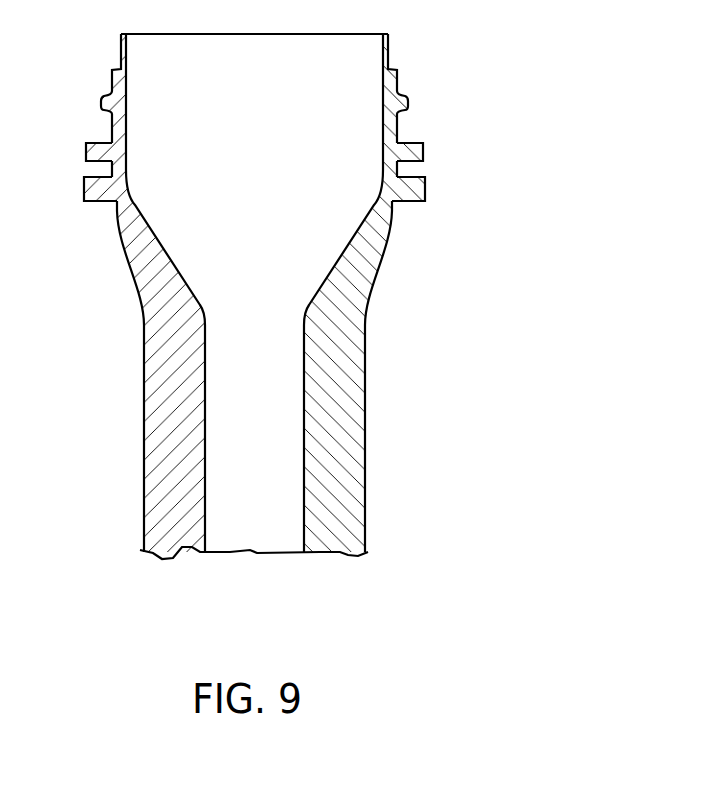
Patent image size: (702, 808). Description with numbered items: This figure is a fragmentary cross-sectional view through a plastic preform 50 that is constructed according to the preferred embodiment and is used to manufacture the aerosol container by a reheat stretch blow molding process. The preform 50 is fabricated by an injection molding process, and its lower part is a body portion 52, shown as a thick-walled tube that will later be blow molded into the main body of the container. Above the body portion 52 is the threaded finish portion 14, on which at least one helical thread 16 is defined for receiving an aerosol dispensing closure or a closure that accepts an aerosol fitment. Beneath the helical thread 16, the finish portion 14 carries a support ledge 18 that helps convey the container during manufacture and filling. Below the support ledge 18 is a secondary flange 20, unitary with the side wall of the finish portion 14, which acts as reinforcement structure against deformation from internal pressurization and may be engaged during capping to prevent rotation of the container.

The threaded finish portion 14 is at (440, 107).
The helical thread 16 is at (404, 91).
The support ledge 18 is at (425, 155).
The secondary flange 20 is at (425, 192).
The plastic preform 50 is at (445, 403).
The body portion 52 is at (358, 507).